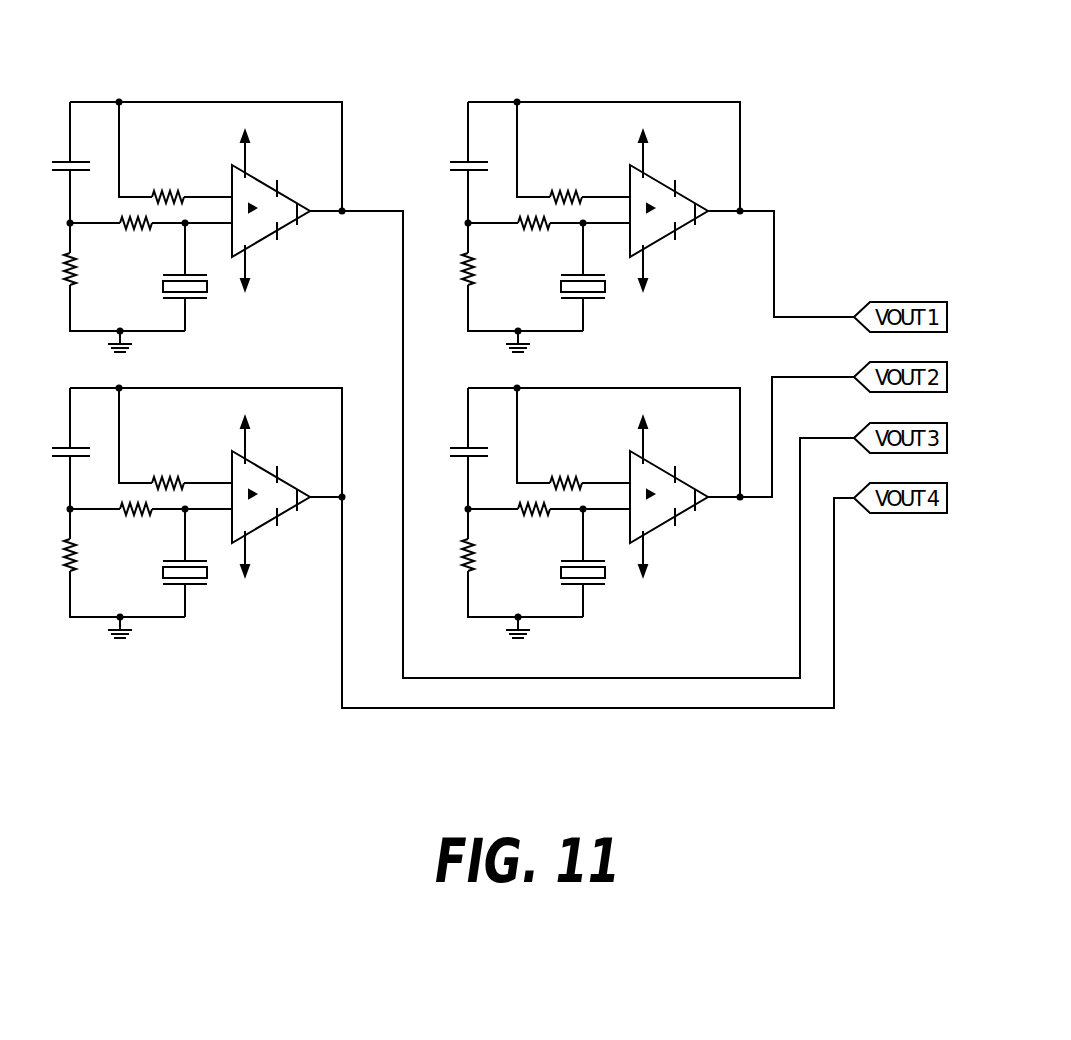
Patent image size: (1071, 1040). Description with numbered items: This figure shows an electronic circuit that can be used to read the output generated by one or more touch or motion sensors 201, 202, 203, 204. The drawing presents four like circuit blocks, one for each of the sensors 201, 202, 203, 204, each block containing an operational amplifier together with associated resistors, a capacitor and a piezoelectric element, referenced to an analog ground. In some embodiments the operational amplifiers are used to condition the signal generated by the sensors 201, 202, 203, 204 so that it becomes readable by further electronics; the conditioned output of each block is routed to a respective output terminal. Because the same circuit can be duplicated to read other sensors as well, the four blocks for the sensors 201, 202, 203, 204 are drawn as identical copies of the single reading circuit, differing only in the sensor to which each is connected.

The touch or motion sensor 201 is at (610, 102).
The touch or motion sensor 202 is at (682, 388).
The touch or motion sensor 203 is at (198, 102).
The touch or motion sensor 204 is at (152, 617).